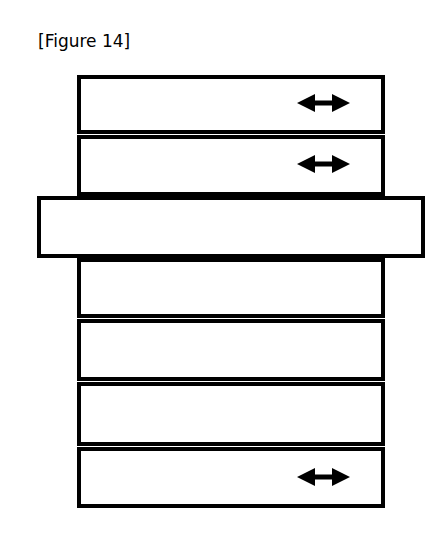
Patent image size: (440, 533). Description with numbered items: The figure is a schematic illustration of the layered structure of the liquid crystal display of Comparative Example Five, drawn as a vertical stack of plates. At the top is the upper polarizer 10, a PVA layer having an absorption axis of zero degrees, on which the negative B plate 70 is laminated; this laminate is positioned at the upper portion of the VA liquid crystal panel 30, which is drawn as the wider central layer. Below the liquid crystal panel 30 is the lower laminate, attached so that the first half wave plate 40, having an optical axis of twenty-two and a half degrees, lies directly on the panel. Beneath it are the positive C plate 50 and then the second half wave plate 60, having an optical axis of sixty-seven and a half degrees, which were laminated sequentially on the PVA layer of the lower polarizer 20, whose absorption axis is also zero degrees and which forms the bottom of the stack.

The upper polarizer 10 is at (231, 104).
The negative B plate 70 is at (231, 165).
The liquid crystal panel 30 is at (231, 227).
The first half wave plate 40 is at (231, 288).
The positive C plate 50 is at (231, 350).
The second half wave plate 60 is at (231, 414).
The lower polarizer 20 is at (231, 477).